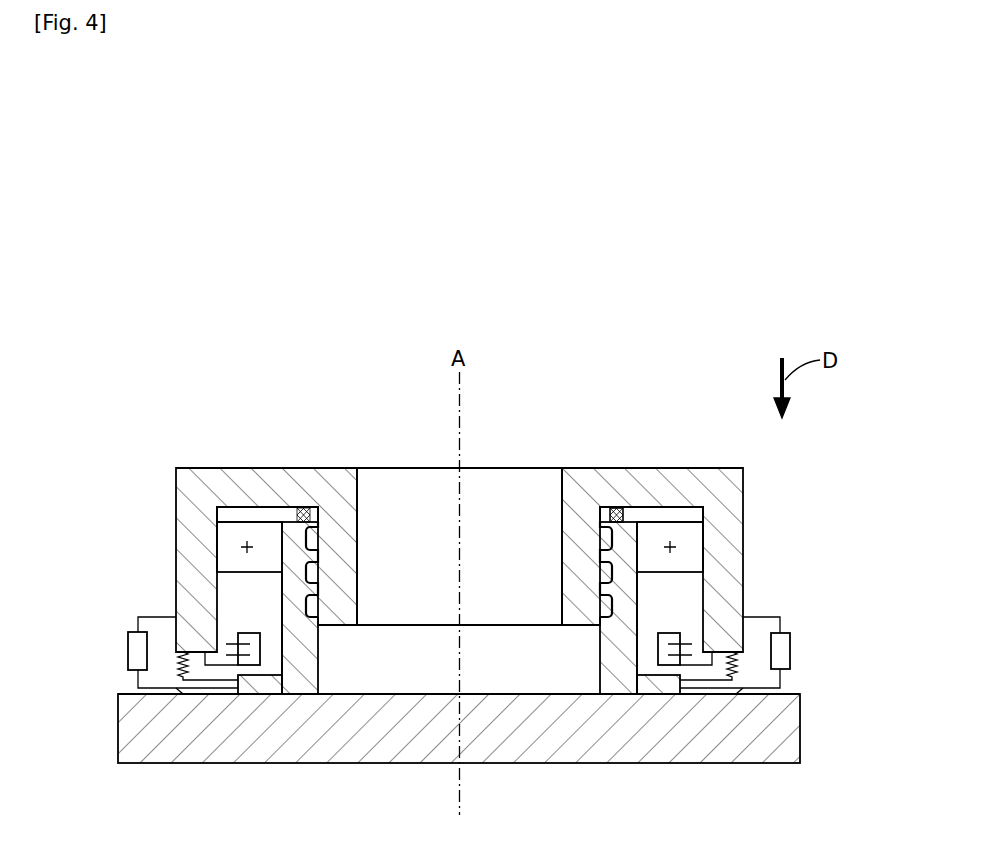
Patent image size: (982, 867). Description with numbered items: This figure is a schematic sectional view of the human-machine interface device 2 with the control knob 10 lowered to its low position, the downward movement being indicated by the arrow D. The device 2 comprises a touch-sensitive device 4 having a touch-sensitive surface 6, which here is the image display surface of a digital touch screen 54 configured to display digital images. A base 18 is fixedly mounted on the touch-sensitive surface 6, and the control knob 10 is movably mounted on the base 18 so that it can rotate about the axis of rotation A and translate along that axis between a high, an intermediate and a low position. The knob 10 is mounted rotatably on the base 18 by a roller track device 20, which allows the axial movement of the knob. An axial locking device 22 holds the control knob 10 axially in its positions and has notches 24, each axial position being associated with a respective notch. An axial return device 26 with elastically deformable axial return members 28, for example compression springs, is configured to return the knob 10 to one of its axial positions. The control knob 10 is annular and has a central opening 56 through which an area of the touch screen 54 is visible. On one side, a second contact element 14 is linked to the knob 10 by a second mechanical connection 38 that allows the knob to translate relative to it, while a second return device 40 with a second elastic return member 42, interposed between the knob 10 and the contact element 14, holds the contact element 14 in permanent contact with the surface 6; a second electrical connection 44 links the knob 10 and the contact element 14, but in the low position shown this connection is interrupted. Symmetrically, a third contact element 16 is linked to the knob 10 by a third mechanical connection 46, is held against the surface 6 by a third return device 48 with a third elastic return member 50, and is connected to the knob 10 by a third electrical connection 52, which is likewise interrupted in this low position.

The human-machine interface device 2 is at (603, 318).
The touch-sensitive device 4 is at (820, 688).
The touch-sensitive surface 6 is at (790, 692).
The control knob 10 is at (712, 462).
The second contact element 14 is at (260, 683).
The third contact element 16 is at (660, 683).
The base 18 is at (310, 673).
The roller track device 20 is at (690, 540).
The axial locking device 22 is at (326, 604).
The notches 24 is at (602, 572).
The axial return device 26 is at (645, 512).
The axial return member 28 is at (297, 505).
The second mechanical connection 38 is at (138, 648).
The second return device 40 is at (178, 690).
The second elastic return member 42 is at (183, 667).
The second electrical connection 44 is at (247, 632).
The third mechanical connection 46 is at (780, 648).
The third return device 48 is at (742, 692).
The third elastic return member 50 is at (737, 665).
The third electrical connection 52 is at (672, 632).
The digital touch screen 54 is at (775, 740).
The central opening 56 is at (312, 322).